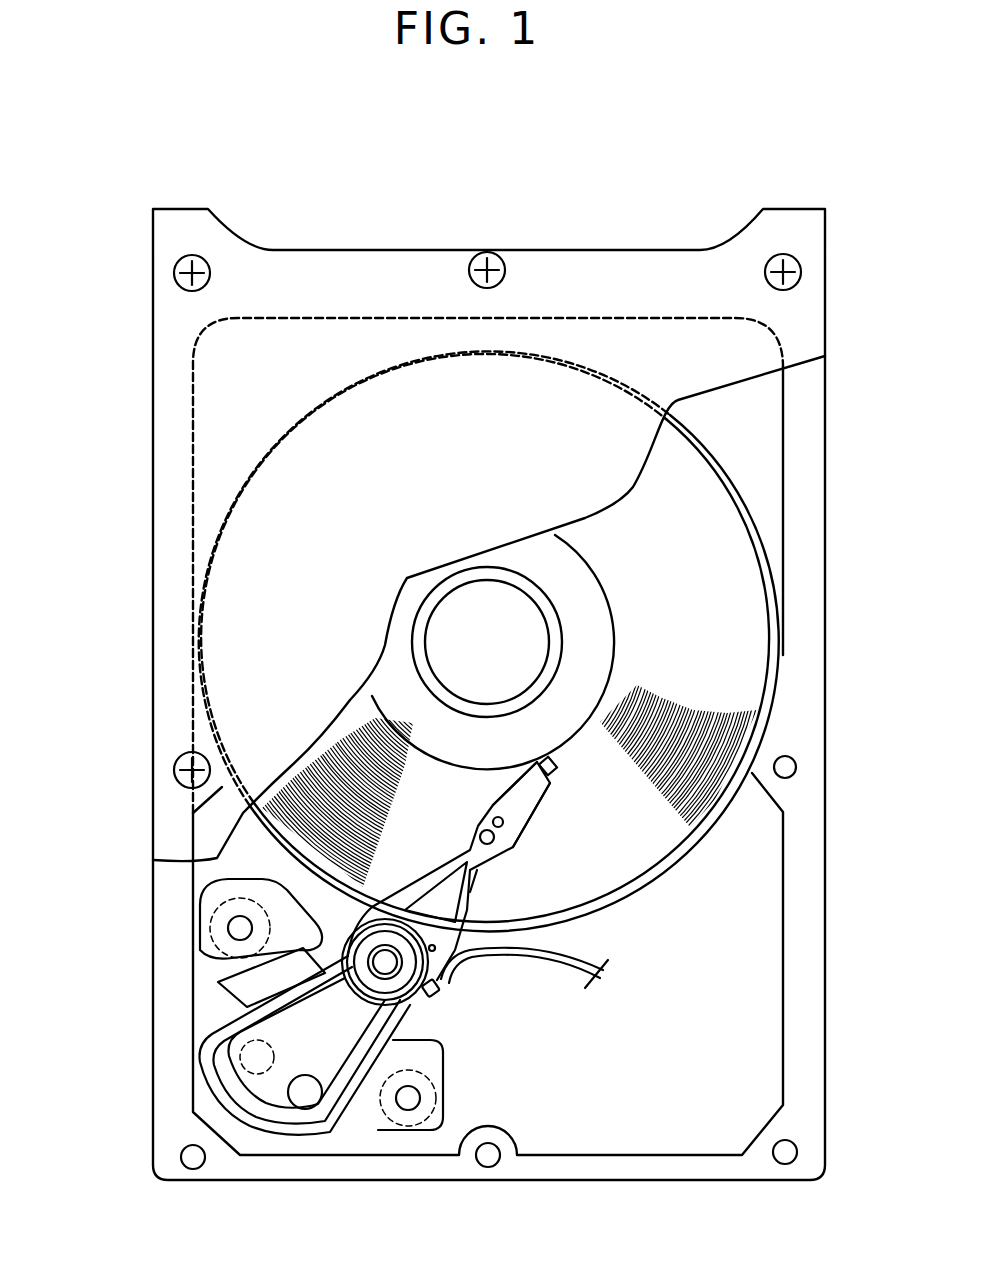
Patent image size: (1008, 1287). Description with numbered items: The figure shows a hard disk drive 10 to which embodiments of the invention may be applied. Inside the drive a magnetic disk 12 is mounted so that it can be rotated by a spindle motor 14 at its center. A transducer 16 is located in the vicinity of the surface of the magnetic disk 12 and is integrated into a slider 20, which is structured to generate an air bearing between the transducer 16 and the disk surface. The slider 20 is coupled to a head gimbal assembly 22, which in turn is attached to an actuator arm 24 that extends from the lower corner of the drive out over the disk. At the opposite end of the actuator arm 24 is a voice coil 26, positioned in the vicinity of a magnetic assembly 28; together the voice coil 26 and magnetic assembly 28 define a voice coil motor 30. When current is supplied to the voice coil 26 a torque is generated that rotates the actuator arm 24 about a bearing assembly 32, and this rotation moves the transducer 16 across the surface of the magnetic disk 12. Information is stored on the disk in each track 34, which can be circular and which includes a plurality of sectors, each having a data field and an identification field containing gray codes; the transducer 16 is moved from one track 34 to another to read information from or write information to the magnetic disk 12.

The hard disk drive 10 is at (625, 165).
The magnetic disk 12 is at (737, 578).
The spindle motor 14 is at (465, 618).
The transducer 16 is at (553, 766).
The slider 20 is at (533, 783).
The head gimbal assembly 22 is at (487, 877).
The actuator arm 24 is at (300, 980).
The voice coil 26 is at (225, 1048).
The magnetic assembly 28 is at (240, 995).
The voice coil motor 30 is at (357, 1113).
The bearing assembly 32 is at (397, 973).
The track 34 is at (350, 760).